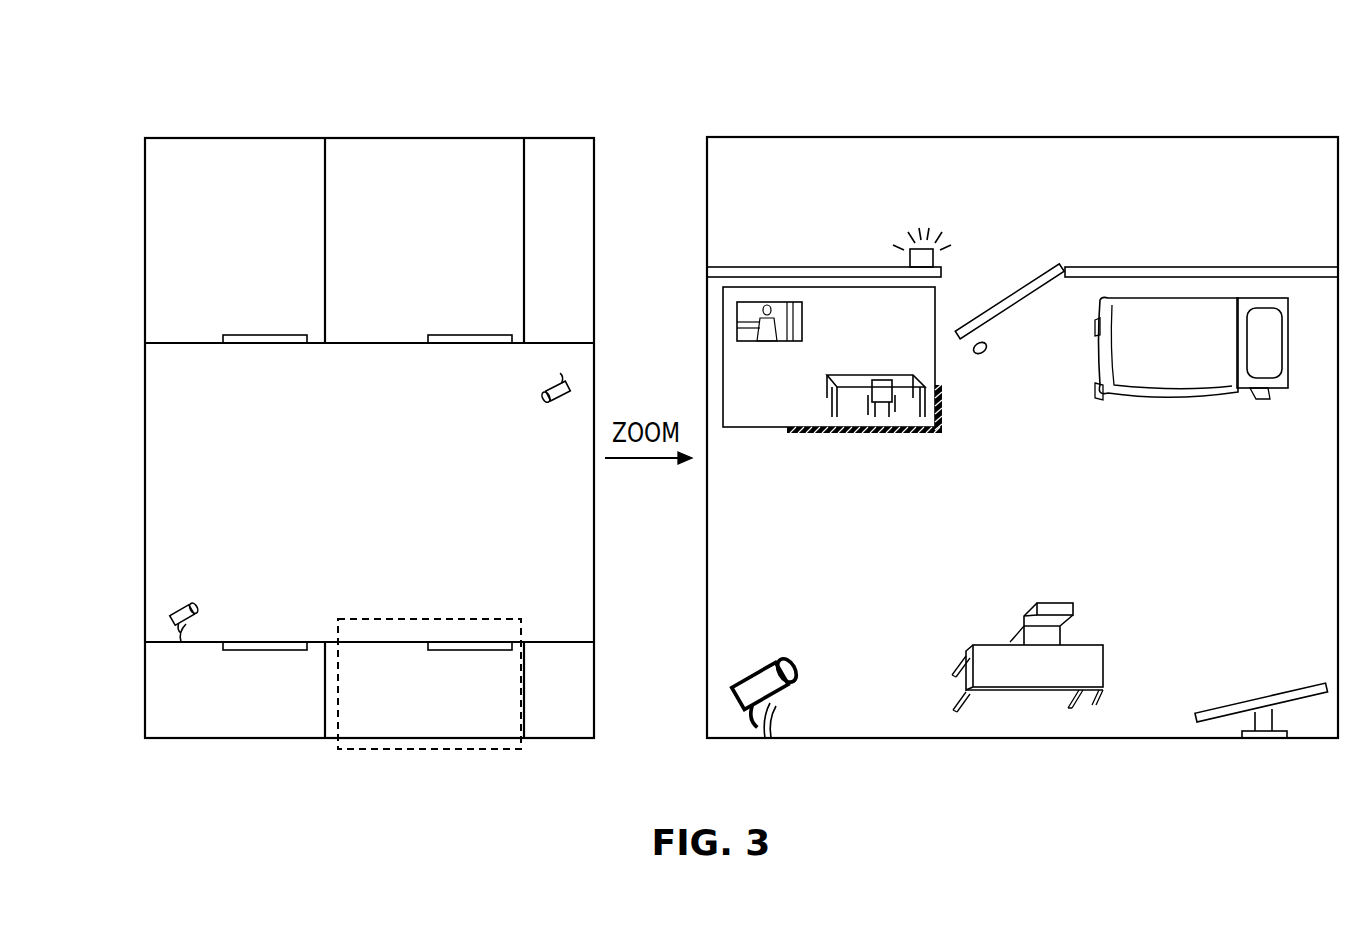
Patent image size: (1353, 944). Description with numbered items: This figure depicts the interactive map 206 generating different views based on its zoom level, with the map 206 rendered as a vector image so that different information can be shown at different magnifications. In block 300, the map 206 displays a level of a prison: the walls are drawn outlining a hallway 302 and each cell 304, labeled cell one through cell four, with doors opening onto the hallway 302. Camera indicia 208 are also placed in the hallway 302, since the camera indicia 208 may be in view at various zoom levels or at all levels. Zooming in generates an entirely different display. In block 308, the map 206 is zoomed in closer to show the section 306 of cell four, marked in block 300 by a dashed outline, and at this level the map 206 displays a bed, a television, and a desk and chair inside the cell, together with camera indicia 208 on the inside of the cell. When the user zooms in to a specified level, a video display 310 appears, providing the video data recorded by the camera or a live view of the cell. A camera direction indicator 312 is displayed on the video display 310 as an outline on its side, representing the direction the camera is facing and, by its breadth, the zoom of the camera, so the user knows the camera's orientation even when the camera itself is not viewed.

The block 300 is at (272, 108).
The hallway 302 is at (162, 468).
The cell 304 is at (162, 293).
The section 306 is at (432, 619).
The block 308 is at (853, 108).
The interactive map 206 is at (580, 183).
The video display 310 is at (723, 313).
The camera direction indicator 312 is at (910, 437).
The camera indicia 208 is at (755, 665).